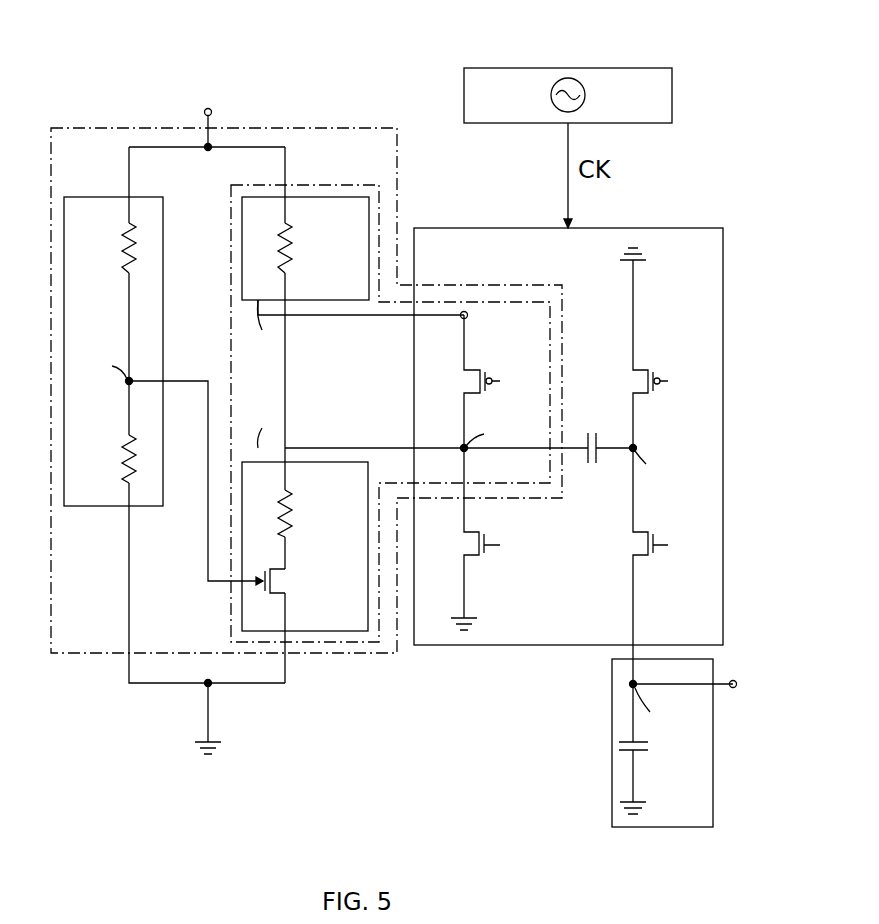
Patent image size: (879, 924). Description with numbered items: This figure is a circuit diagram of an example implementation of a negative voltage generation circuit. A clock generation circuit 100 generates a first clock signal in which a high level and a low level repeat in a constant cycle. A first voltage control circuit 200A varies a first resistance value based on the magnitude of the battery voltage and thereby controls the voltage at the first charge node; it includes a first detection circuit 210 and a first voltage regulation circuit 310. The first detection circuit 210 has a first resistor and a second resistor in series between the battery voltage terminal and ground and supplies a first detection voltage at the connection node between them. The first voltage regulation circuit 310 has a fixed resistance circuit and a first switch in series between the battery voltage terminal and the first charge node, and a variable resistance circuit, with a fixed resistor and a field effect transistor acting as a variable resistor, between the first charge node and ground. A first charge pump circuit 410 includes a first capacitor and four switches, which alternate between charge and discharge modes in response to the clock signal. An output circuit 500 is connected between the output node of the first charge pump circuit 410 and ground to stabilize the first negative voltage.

The clock generation circuit 100 is at (638, 68).
The first voltage control circuit 200A is at (106, 127).
The first detection circuit 210 is at (100, 196).
The first voltage regulation circuit 310 is at (343, 185).
The first charge pump circuit 410 is at (640, 228).
The output circuit 500 is at (611, 696).